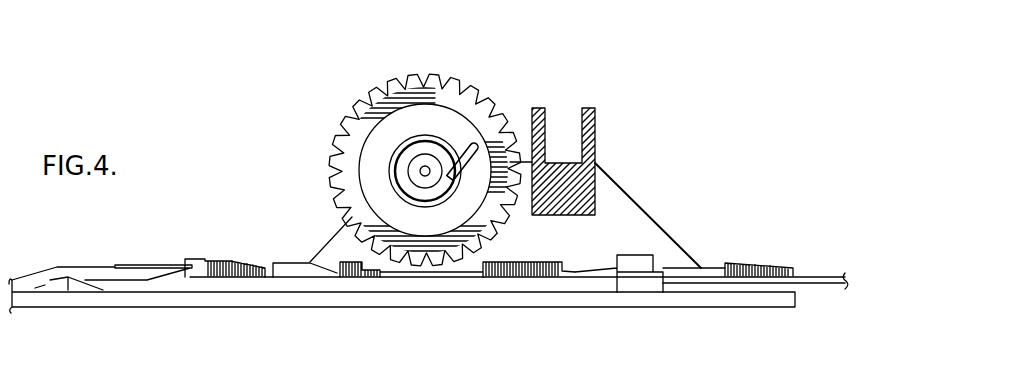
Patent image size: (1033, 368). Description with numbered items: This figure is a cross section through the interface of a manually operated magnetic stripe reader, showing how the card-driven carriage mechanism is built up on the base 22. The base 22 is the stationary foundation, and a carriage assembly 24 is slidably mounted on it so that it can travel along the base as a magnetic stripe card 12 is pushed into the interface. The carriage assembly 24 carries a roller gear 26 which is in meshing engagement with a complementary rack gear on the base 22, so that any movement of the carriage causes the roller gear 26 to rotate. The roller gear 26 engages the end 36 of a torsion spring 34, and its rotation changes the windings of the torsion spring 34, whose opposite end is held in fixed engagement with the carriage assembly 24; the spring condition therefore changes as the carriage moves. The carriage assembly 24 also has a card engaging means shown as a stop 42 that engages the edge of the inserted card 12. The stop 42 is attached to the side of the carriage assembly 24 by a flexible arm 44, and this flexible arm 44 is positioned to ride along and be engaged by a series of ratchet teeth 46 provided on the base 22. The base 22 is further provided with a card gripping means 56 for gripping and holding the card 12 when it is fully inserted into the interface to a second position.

The magnetic stripe card 12 is at (817, 282).
The base 22 is at (645, 308).
The carriage assembly 24 is at (597, 127).
The roller gear 26 is at (455, 83).
The torsion spring 34 is at (395, 150).
The end of the torsion spring 36 is at (491, 143).
The stop 42 is at (668, 279).
The flexible arm 44 is at (647, 262).
The ratchet teeth 46 is at (207, 259).
The card gripping means 56 is at (66, 266).